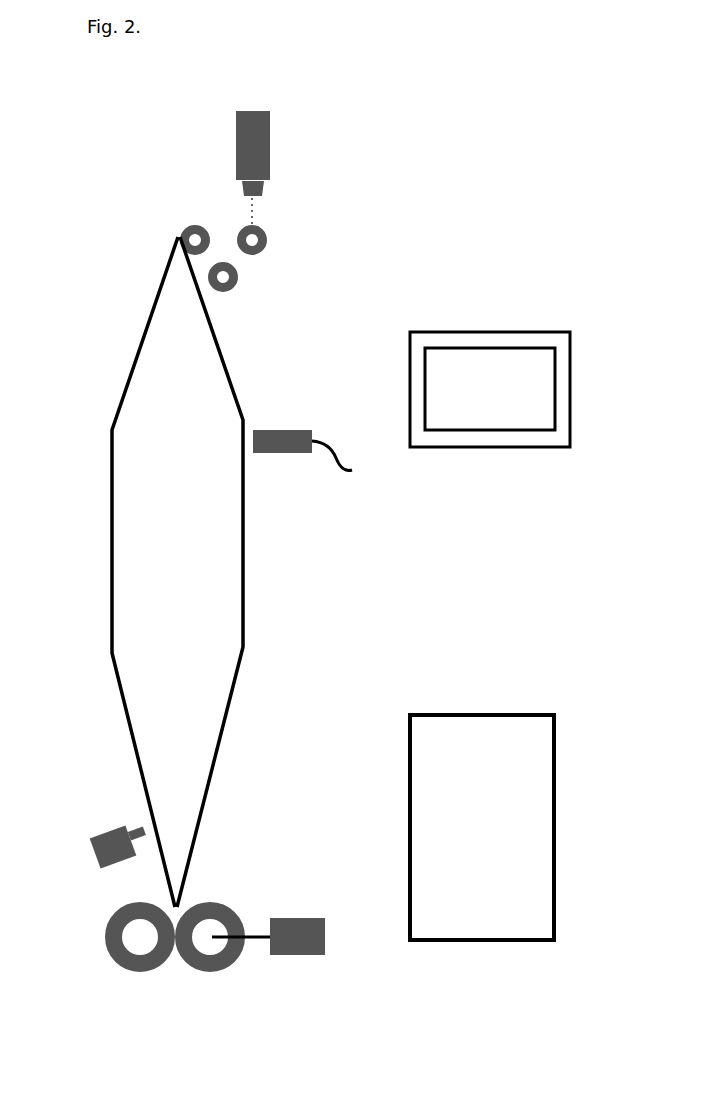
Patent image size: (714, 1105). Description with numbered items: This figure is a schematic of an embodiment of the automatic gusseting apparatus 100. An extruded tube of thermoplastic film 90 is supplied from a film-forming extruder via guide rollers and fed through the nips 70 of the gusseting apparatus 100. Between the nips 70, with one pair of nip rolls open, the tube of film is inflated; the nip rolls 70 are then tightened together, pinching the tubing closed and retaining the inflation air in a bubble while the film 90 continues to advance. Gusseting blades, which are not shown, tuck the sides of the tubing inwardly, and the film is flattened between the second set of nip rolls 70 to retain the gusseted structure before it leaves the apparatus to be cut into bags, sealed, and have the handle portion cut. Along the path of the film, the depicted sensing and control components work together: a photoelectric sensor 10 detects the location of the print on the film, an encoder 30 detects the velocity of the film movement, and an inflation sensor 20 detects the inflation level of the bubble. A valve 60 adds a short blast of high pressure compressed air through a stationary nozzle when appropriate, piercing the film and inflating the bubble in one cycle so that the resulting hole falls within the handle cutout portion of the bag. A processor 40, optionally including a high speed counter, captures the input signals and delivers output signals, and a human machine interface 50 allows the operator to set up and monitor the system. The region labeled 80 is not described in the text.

The gusseting apparatus 100 is at (519, 130).
The photoelectric sensor 10 is at (288, 133).
The nip rolls 70 is at (288, 239).
The web 80 is at (181, 583).
The tube of thermoplastic film 90 is at (233, 743).
The inflation sensor 20 is at (295, 427).
The human machine interface 50 is at (503, 459).
The processor 40 is at (571, 716).
The valve 60 is at (97, 814).
The encoder 30 is at (293, 973).